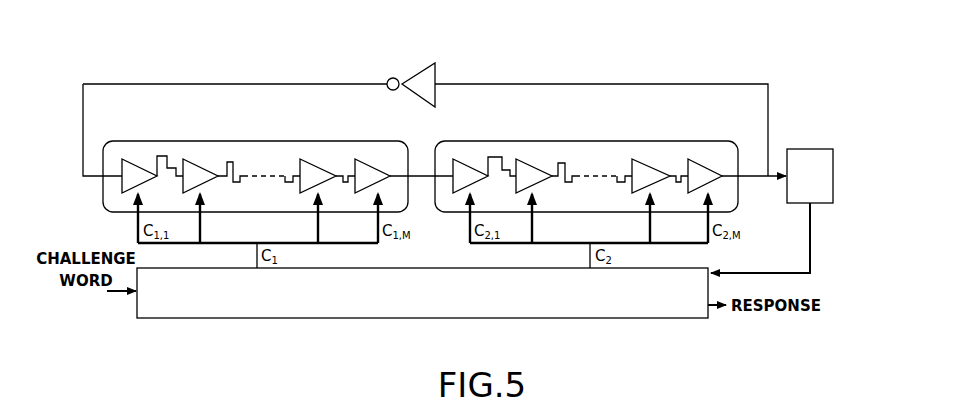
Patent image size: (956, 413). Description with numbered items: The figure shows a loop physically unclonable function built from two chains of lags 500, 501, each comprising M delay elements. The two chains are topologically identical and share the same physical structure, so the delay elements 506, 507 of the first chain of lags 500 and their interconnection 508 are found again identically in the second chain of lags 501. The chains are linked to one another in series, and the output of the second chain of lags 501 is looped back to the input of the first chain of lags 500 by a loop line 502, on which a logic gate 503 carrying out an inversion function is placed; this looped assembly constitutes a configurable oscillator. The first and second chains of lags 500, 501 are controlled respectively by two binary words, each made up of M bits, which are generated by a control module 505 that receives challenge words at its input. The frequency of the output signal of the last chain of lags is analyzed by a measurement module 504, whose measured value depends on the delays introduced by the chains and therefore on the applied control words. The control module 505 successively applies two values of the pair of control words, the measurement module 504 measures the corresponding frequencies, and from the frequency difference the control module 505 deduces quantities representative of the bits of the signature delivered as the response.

The first chain of lags 500 is at (262, 163).
The second chain of lags 501 is at (683, 140).
The loop line 502 is at (627, 84).
The logic gate 503 is at (419, 67).
The measurement module 504 is at (808, 148).
The control module 505 is at (305, 318).
The delay element 506 is at (142, 159).
The delay element 507 is at (203, 160).
The interconnection 508 is at (168, 157).